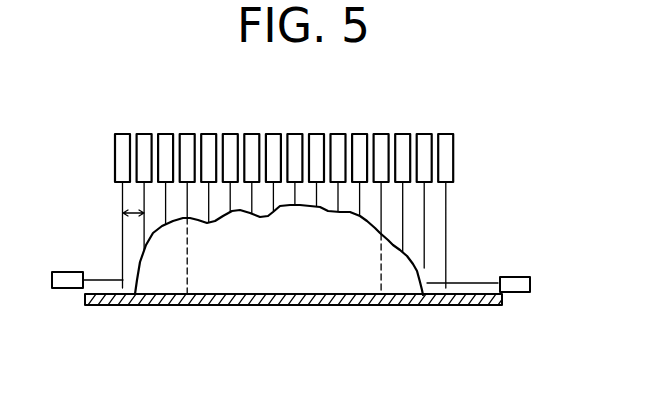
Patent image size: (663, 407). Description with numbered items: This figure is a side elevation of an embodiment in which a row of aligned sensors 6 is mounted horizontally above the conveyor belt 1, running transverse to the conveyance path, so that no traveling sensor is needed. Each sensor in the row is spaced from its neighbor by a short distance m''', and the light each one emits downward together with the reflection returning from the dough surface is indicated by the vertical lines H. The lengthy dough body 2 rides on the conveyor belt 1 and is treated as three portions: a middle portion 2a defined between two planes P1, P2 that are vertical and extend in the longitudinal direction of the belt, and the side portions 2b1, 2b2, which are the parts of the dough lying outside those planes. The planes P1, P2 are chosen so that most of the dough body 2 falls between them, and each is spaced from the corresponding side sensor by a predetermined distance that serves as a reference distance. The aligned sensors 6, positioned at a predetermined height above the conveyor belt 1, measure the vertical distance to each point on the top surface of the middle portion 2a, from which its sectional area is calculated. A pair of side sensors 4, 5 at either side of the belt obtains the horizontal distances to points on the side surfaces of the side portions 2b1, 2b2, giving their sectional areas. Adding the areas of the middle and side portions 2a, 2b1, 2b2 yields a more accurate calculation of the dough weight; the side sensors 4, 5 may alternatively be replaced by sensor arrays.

The conveyor belt 1 is at (222, 306).
The dough body 2 is at (282, 272).
The middle portion 2a is at (287, 252).
The side portion 2b1 is at (157, 265).
The side portion 2b2 is at (403, 275).
The side sensor 4 is at (60, 288).
The side sensor 5 is at (530, 284).
The aligned sensors 6 is at (362, 134).
The vertical lines H is at (103, 280).
The plane P1 is at (187, 282).
The plane P2 is at (383, 280).
The short distance m''' is at (105, 203).